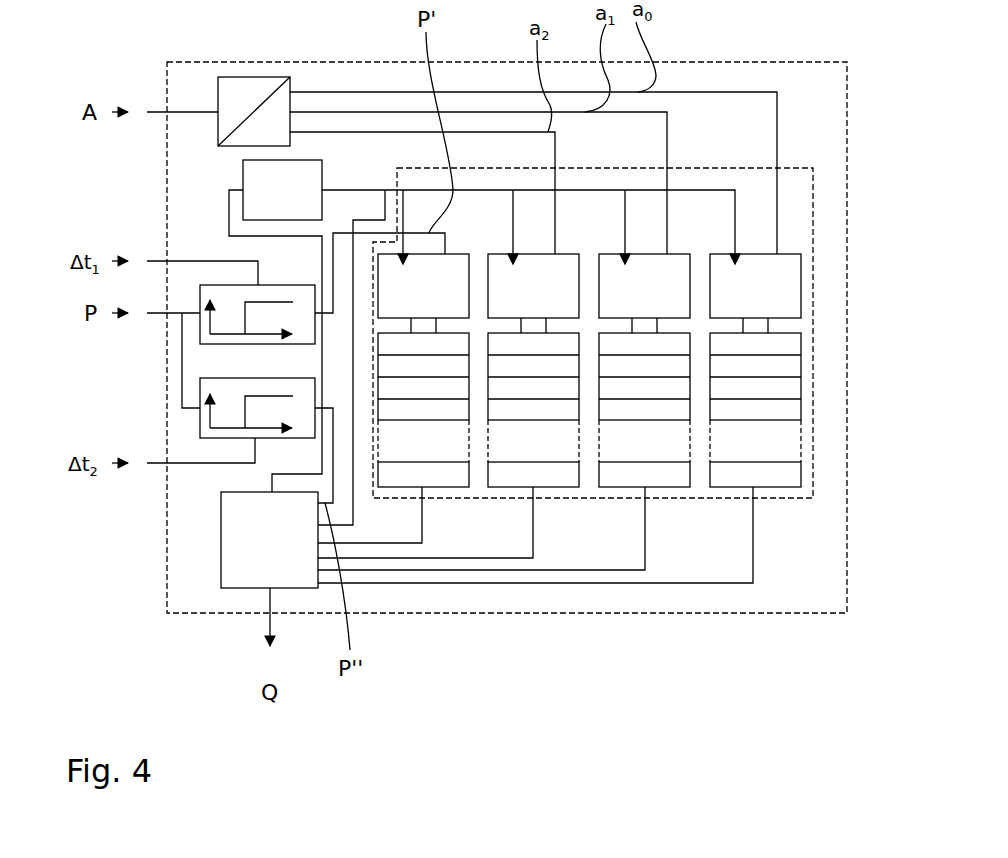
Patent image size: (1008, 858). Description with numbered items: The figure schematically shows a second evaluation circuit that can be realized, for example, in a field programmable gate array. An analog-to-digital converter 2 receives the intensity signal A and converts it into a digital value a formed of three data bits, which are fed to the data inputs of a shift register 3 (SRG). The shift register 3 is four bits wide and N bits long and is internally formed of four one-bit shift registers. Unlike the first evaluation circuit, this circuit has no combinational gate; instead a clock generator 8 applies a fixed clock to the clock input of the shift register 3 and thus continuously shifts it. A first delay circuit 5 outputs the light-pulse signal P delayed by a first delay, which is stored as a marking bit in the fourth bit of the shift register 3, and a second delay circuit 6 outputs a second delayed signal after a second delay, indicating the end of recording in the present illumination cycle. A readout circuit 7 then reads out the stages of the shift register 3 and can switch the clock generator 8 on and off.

The analog-to-digital converter 2 is at (263, 77).
The shift register 3 is at (814, 222).
The first delay circuit 5 is at (200, 335).
The second delay circuit 6 is at (197, 438).
The readout circuit 7 is at (221, 535).
The clock generator 8 is at (307, 160).